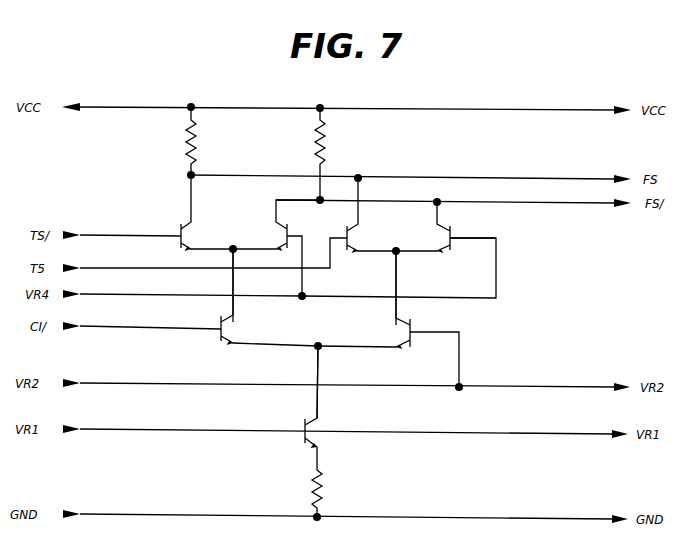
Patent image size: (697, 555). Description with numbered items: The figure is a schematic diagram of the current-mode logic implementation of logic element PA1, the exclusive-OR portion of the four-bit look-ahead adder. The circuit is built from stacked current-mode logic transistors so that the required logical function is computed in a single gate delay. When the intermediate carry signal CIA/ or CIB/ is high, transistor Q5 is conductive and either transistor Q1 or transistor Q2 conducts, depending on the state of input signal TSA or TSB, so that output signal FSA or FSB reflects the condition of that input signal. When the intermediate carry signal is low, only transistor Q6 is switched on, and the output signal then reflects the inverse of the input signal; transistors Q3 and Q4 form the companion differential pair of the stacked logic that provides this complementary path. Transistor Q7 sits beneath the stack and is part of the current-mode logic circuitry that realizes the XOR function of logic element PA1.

The transistor Q1 is at (207, 213).
The transistor Q2 is at (276, 248).
The transistor Q3 is at (371, 215).
The transistor Q4 is at (446, 227).
The transistor Q5 is at (269, 297).
The transistor Q6 is at (388, 319).
The transistor Q7 is at (323, 431).